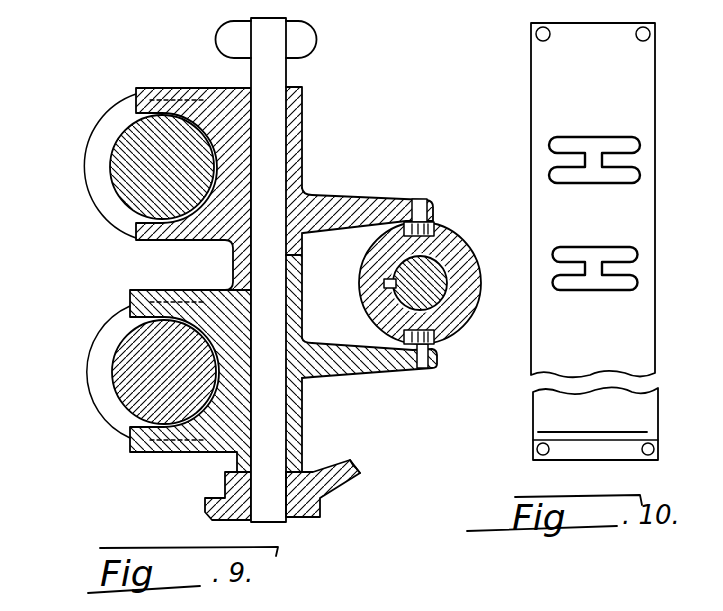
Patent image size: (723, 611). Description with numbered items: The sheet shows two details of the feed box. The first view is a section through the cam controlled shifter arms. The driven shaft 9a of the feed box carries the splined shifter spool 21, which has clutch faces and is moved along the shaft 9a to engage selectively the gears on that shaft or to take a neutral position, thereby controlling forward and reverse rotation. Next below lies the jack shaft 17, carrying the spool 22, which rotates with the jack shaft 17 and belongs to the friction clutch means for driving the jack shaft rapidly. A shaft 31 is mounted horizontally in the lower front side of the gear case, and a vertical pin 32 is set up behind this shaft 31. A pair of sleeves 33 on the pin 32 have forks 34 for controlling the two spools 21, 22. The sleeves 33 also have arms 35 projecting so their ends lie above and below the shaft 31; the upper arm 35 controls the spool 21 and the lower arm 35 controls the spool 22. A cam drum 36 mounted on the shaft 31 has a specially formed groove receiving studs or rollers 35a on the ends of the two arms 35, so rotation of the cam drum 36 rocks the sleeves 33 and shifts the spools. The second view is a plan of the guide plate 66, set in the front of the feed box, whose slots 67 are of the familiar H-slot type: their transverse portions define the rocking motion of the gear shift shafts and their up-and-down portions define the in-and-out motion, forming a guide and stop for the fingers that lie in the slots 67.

In FIG. 9, the driven shaft 9a is at (135, 198).
In FIG. 9, the jack shaft 17 is at (130, 345).
In FIG. 9, the splined shifter spool 21 is at (97, 192).
In FIG. 9, the spool 22 is at (98, 378).
In FIG. 9, the shaft 31 is at (450, 260).
In FIG. 9, the vertical pin 32 is at (268, 167).
In FIG. 9, the sleeves 33 is at (297, 120).
In FIG. 9, the forks 34 is at (145, 241).
In FIG. 9, the arms 35 is at (365, 193).
In FIG. 9, the studs or rollers 35a is at (440, 217).
In FIG. 9, the cam drum 36 is at (465, 325).
In FIG. 10, the plate 66 is at (545, 87).
In FIG. 10, the slots 67 is at (570, 150).